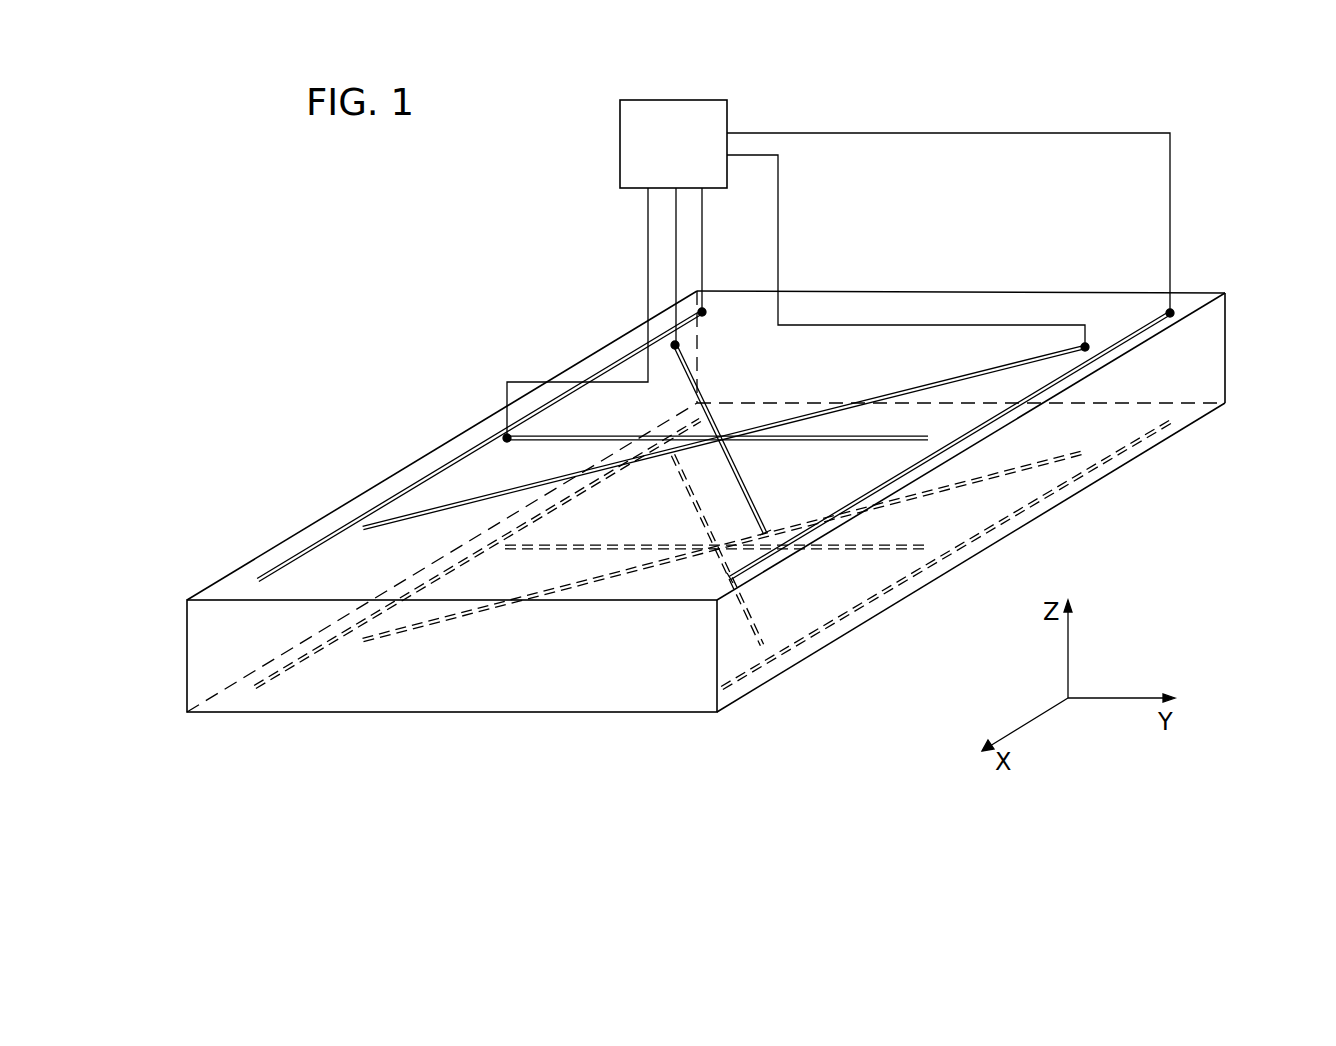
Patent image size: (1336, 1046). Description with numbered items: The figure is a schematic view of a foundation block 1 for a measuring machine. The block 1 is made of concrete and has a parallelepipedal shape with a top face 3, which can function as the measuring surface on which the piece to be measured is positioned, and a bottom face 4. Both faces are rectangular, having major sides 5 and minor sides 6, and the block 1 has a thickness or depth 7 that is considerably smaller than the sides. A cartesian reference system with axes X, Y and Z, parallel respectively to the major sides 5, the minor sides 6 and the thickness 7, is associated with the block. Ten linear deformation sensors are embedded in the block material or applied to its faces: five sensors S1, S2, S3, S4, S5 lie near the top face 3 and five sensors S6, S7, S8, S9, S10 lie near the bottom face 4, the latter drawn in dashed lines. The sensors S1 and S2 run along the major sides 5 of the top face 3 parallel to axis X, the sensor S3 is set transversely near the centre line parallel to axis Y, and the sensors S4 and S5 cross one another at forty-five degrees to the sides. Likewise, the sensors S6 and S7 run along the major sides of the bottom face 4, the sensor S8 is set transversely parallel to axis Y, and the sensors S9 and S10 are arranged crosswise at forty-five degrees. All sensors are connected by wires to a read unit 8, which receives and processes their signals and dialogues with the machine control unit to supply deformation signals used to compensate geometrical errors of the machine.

The foundation block 1 is at (526, 320).
The top face 3 is at (910, 292).
The bottom face 4 is at (1105, 426).
The major sides 5 is at (453, 437).
The minor sides 6 is at (1048, 291).
The thickness or depth 7 is at (187, 638).
The read unit 8 is at (626, 135).
The linear deformation sensor S1 is at (407, 488).
The linear deformation sensor S2 is at (1120, 323).
The linear deformation sensor S3 is at (852, 436).
The linear deformation sensor S4 is at (680, 351).
The linear deformation sensor S5 is at (390, 527).
The linear deformation sensor S6 is at (300, 648).
The linear deformation sensor S7 is at (806, 636).
The linear deformation sensor S8 is at (841, 538).
The linear deformation sensor S9 is at (468, 598).
The linear deformation sensor S10 is at (752, 626).